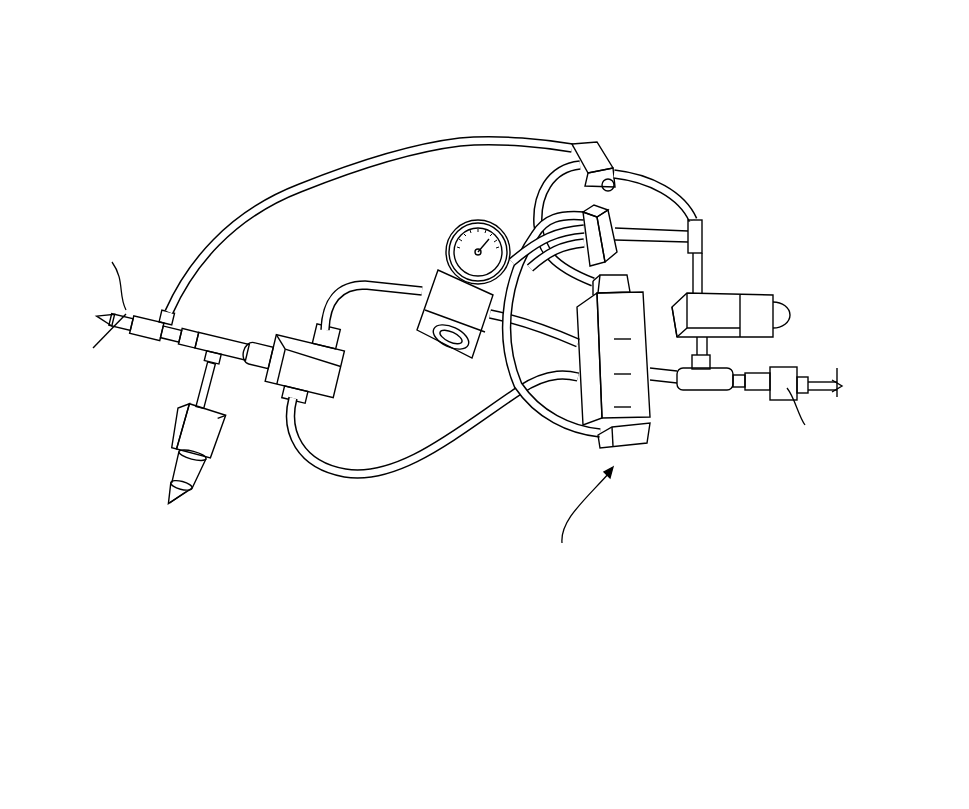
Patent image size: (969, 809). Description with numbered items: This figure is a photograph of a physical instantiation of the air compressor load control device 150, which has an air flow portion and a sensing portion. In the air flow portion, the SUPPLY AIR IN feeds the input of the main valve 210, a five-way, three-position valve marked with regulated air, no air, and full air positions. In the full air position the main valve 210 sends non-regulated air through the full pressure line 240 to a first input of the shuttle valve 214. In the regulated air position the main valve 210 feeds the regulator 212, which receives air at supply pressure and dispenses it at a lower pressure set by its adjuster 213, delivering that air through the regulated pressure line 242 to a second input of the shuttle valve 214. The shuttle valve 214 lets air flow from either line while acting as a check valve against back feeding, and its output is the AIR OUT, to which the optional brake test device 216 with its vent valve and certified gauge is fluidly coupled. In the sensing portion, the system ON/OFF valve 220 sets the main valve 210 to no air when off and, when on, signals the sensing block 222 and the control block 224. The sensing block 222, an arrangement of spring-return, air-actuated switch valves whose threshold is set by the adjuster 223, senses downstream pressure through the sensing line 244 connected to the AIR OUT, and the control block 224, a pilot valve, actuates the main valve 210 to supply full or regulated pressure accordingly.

The air compressor load control device 150 is at (360, 95).
The main valve 210 is at (653, 397).
The regulator 212 is at (443, 287).
The adjuster 213 is at (442, 347).
The shuttle valve 214 is at (293, 340).
The brake test device 216 is at (180, 427).
The system ON/OFF valve 220 is at (712, 292).
The sensing block 222 is at (612, 155).
The adjuster 223 is at (680, 168).
The control block 224 is at (537, 217).
The full pressure line 240 is at (432, 457).
The regulated pressure line 242 is at (357, 287).
The sensing line 244 is at (220, 238).